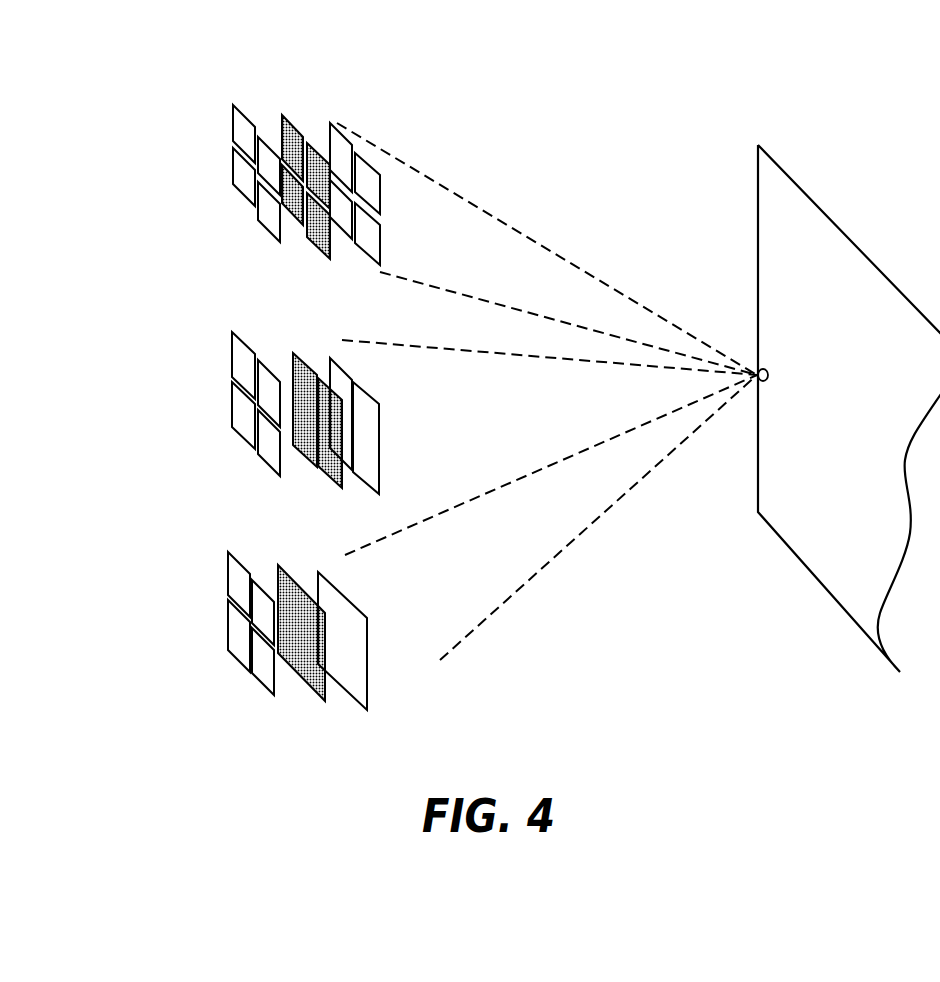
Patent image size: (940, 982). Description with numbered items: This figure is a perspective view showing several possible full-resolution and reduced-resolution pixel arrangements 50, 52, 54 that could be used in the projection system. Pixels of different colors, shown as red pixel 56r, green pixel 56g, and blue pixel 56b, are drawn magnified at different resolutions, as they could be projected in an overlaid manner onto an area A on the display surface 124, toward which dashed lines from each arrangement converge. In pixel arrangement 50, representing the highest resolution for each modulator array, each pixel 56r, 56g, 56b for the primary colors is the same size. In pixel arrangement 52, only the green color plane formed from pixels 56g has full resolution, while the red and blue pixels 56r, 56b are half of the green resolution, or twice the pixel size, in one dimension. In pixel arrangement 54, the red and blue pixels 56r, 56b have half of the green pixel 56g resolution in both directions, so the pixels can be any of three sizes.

The pixel arrangement 50 is at (147, 159).
The pixel arrangement 52 is at (145, 400).
The pixel arrangement 54 is at (150, 670).
The green pixel 56g is at (266, 133).
The blue pixel 56b is at (311, 143).
The red pixel 56r is at (345, 150).
The display surface 124 is at (793, 543).
The area A is at (757, 372).